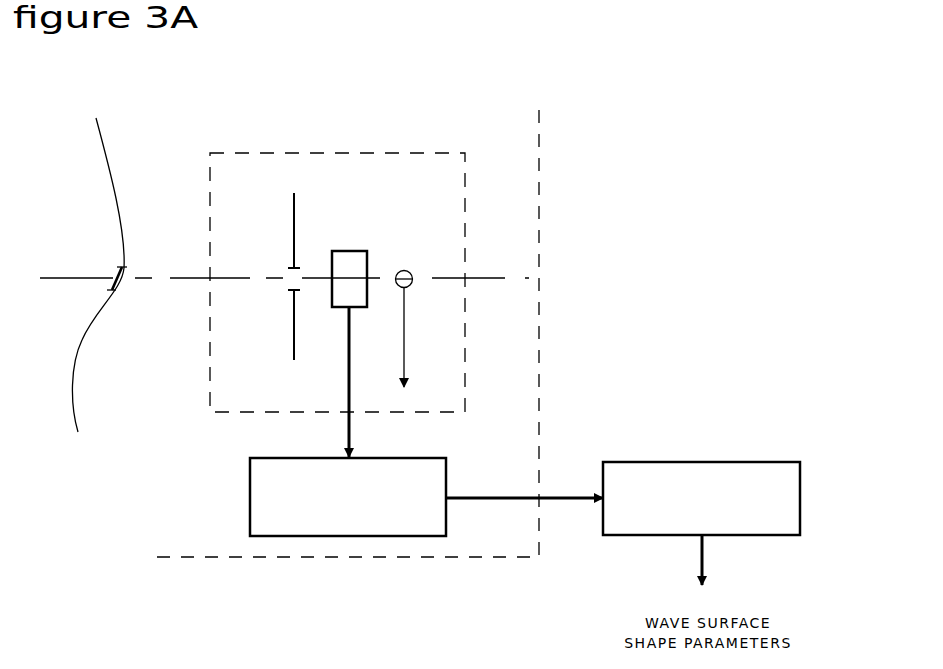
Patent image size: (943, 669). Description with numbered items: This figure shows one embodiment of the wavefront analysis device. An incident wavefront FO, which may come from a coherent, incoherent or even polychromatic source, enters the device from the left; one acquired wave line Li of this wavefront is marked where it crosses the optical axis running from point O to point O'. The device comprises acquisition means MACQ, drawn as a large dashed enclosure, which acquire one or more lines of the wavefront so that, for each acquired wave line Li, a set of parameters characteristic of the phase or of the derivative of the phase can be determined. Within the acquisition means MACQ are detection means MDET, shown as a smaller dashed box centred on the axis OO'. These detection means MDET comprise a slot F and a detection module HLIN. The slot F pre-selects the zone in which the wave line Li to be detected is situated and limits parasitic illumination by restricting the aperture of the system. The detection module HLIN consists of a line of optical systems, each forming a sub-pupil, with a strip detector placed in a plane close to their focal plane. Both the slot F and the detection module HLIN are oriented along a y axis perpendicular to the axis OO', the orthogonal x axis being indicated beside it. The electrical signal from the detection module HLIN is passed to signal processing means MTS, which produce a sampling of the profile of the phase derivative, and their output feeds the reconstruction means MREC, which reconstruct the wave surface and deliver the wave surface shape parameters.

The incident wavefront FO is at (108, 148).
The acquired wave line Li is at (113, 272).
The slot F is at (293, 208).
The detection module HLIN is at (355, 250).
The detection means MDET is at (428, 153).
The acquisition means MACQ is at (540, 225).
The signal processing means MTS is at (249, 488).
The reconstruction means MREC is at (707, 462).
The axis origin point O is at (279, 286).
The axis end point O' is at (509, 292).
The x axis x is at (406, 333).
The y axis y is at (409, 263).